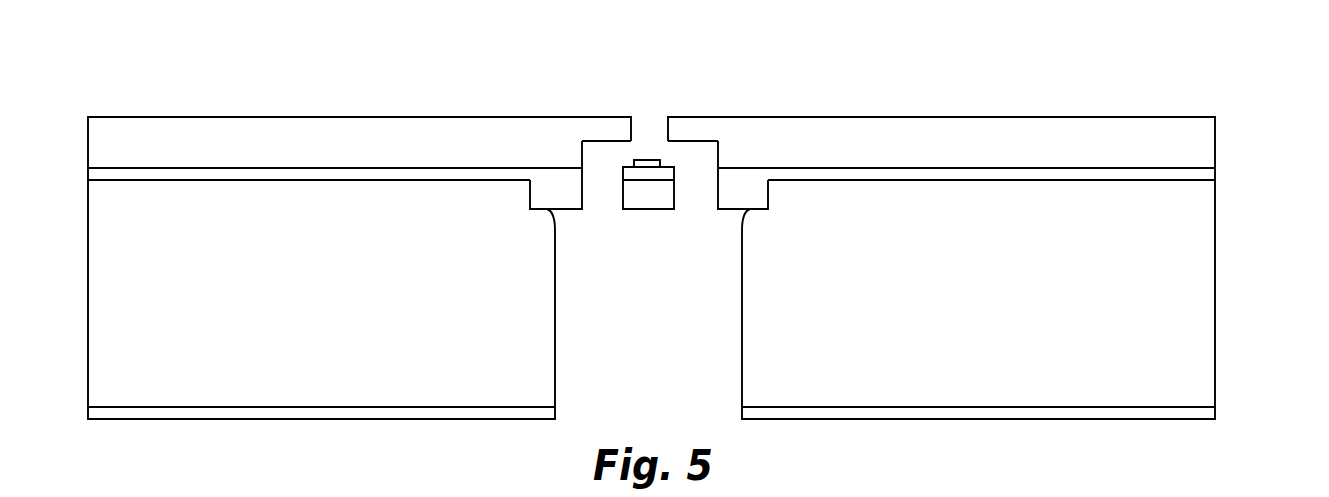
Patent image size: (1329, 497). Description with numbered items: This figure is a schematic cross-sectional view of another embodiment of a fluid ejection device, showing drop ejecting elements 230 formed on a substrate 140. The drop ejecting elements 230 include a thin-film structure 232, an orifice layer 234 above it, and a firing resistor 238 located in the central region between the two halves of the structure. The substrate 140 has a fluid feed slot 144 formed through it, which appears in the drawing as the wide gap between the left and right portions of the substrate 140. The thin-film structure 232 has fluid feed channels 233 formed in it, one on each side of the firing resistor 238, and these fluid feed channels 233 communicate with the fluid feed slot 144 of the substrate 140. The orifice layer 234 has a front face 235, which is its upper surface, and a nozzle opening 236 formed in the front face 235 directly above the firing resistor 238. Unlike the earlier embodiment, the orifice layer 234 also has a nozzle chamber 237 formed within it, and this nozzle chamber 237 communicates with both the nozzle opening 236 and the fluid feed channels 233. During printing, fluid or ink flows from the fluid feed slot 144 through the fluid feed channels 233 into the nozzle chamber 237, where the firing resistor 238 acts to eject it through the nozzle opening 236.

The drop ejecting elements 230 is at (848, 60).
The orifice layer 234 is at (1222, 116).
The thin-film structure 232 is at (1222, 165).
The substrate 140 is at (1222, 183).
The fluid feed channels 233 is at (607, 170).
The nozzle opening 236 is at (634, 127).
The nozzle chamber 237 is at (670, 155).
The firing resistor 238 is at (643, 158).
The front face 235 is at (296, 117).
The fluid feed slot 144 is at (672, 317).